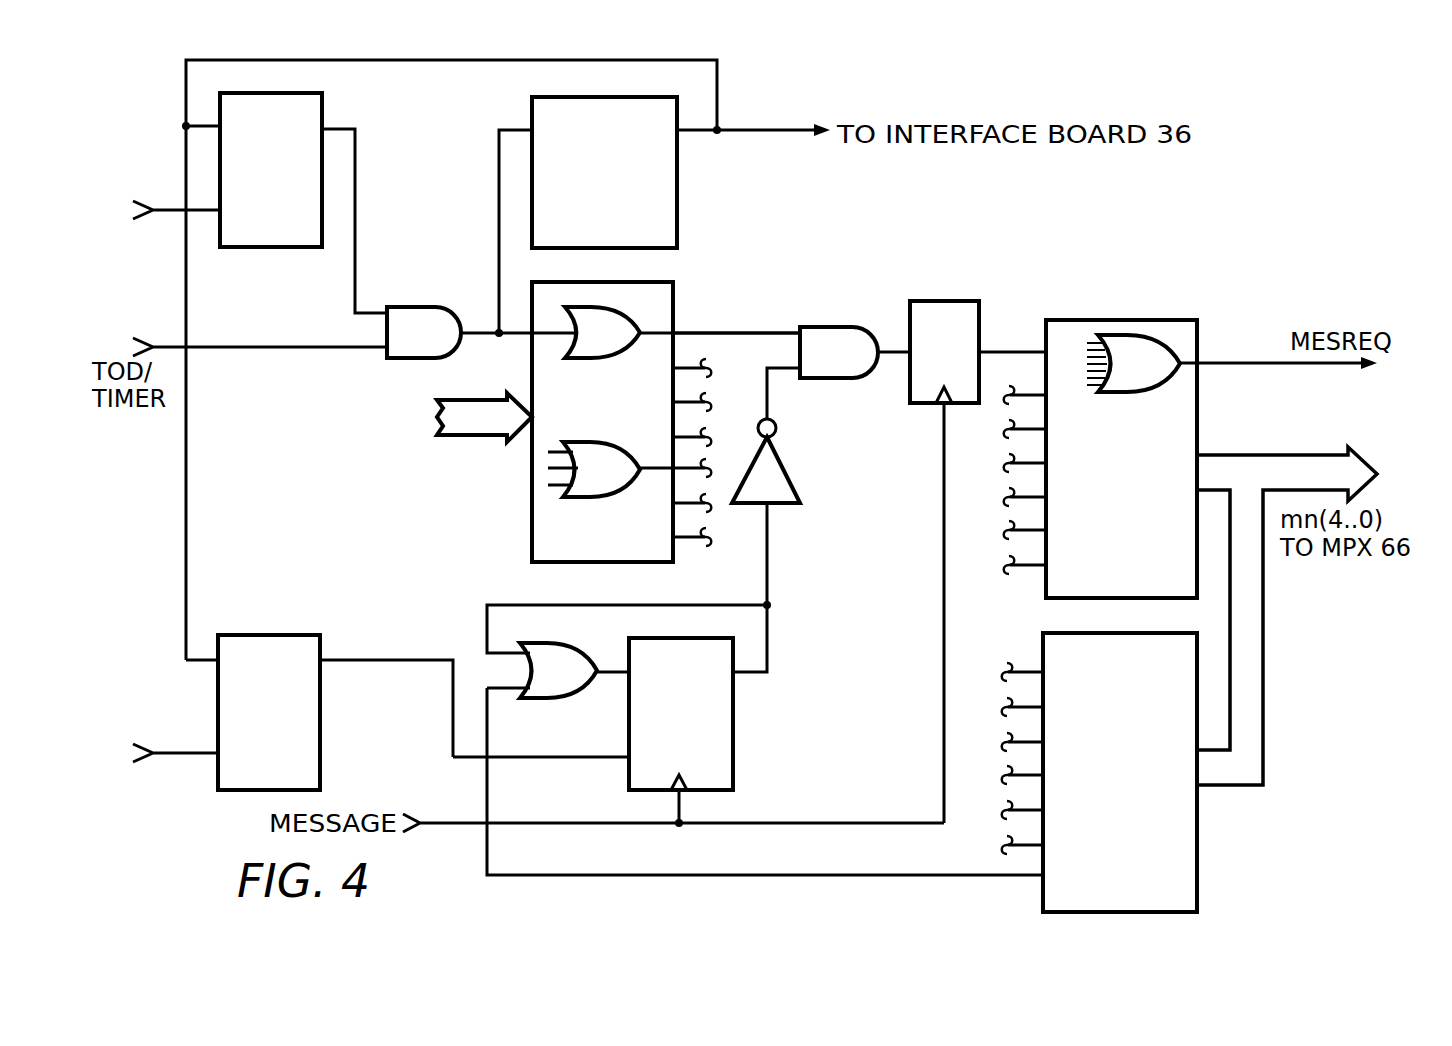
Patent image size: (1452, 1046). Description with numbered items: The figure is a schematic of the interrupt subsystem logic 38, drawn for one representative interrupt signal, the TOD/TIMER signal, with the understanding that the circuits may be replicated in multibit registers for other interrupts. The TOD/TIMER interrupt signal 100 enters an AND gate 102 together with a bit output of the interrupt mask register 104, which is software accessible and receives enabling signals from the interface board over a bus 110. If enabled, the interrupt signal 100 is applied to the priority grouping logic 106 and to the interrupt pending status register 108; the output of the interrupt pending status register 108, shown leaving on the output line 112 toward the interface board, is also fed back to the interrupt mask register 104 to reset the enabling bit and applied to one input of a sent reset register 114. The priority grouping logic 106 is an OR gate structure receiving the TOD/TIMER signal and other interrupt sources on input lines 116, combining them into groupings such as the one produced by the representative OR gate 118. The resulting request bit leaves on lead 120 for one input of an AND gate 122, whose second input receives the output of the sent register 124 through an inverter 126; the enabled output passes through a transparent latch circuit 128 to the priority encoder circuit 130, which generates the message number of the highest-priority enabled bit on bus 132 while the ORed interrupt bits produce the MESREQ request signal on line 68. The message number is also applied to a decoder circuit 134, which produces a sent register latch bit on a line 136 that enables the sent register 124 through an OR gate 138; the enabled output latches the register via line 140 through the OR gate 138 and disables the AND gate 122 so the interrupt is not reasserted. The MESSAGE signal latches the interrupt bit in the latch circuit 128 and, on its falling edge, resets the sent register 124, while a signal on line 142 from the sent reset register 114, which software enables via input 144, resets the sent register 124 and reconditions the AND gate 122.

The interrupt subsystem logic 38 is at (337, 525).
The interrupt mask register 104 is at (297, 93).
The interrupt pending status register 108 is at (532, 107).
The interrupt output line to interface board 112 is at (692, 135).
The bus 110 is at (168, 207).
The interrupt signal 100 is at (168, 347).
The AND gate 102 is at (448, 307).
The priority grouping logic 106 is at (676, 323).
The input lines 116 is at (488, 440).
The OR gate 118 is at (622, 445).
The lead 120 is at (727, 333).
The AND gate 122 is at (868, 327).
The inverter 126 is at (790, 485).
The transparent latch circuit 128 is at (975, 301).
The priority encoder circuit 130 is at (1078, 320).
The line 68 is at (1303, 365).
The bus 132 is at (1237, 455).
The decoder circuit 134 is at (1197, 830).
The line 136 is at (873, 875).
The OR gate 138 is at (587, 690).
The sent register 124 is at (735, 764).
The line 140 is at (650, 605).
The line 142 is at (352, 660).
The sent reset register 114 is at (278, 635).
The enabling input 144 is at (200, 757).